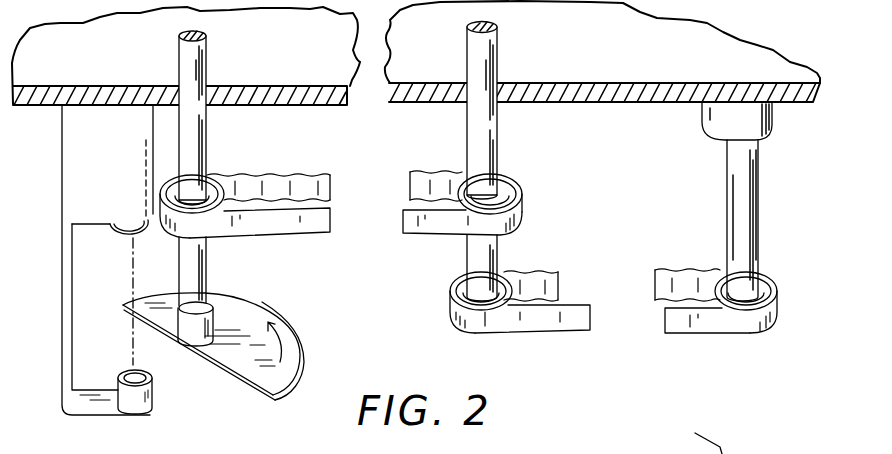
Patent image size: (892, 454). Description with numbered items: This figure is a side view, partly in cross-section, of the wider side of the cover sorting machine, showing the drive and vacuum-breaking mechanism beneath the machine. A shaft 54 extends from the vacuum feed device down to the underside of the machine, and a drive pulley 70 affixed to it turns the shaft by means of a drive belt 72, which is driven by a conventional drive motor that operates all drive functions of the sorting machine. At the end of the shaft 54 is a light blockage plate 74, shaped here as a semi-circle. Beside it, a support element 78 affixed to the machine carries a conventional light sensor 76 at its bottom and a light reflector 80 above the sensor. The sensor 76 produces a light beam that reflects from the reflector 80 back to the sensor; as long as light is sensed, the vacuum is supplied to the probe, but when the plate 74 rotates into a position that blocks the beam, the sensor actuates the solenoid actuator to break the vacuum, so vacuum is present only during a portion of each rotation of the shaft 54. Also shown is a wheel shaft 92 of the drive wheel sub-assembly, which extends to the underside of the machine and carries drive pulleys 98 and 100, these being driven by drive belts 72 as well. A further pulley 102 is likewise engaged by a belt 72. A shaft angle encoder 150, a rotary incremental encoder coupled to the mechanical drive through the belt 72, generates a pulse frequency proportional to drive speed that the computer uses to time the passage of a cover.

The shaft 54 is at (205, 67).
The drive pulley 70 is at (212, 186).
The drive belt 72 is at (292, 229).
The light blockage plate 74 is at (292, 355).
The light sensor 76 is at (153, 392).
The support element 78 is at (72, 197).
The light reflector 80 is at (123, 235).
The wheel shaft 92 is at (494, 66).
The drive pulley 98 is at (504, 182).
The drive pulley 100 is at (457, 297).
The ring collar 102 is at (763, 292).
The shaft angle encoder 150 is at (768, 122).